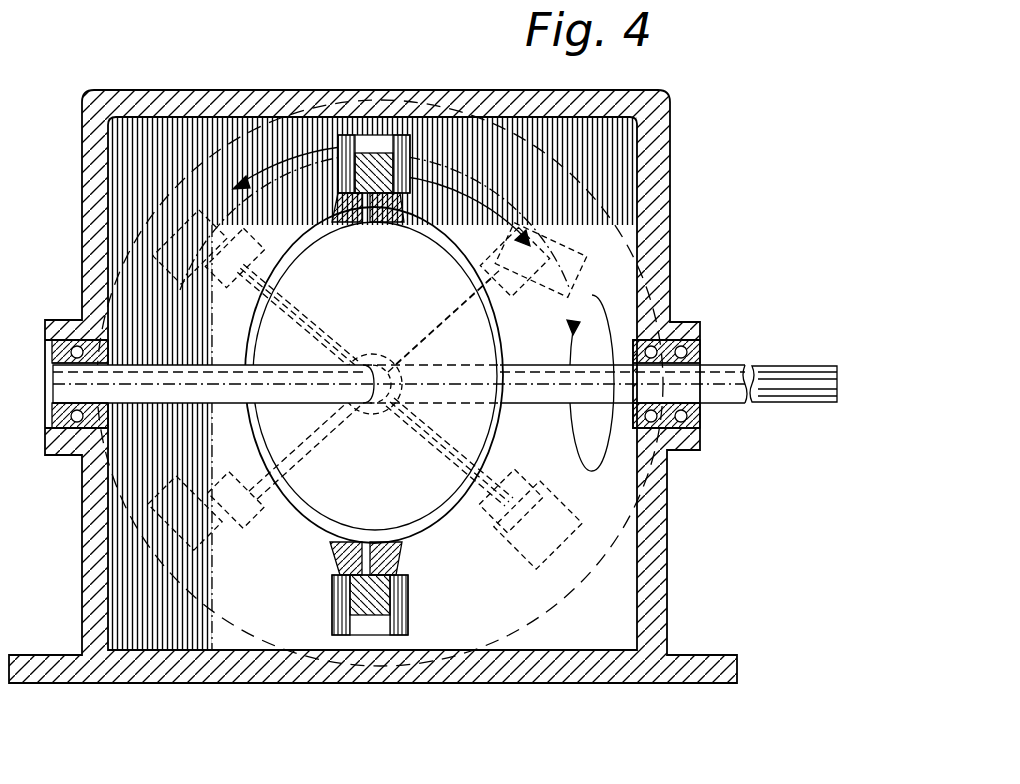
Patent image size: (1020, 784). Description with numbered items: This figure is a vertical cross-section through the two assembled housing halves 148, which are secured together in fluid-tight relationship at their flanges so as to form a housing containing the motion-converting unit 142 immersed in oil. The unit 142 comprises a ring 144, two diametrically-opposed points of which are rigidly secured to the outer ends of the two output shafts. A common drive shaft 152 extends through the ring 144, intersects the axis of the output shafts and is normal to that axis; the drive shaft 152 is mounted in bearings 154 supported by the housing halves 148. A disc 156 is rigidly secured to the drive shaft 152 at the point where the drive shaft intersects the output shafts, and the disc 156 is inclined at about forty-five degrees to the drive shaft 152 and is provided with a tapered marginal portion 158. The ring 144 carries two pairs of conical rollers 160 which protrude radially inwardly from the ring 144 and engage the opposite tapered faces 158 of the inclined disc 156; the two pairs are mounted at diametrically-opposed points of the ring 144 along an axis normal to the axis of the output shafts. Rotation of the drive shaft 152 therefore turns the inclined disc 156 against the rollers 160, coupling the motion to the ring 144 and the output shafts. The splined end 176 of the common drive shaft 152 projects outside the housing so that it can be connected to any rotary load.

The motion-converting unit 142 is at (684, 220).
The ring 144 is at (372, 160).
The housing halves 148 is at (660, 160).
The common drive shaft 152 is at (283, 392).
The bearings 154 is at (58, 445).
The disc 156 is at (322, 497).
The tapered marginal portion 158 is at (325, 548).
The rollers 160 is at (380, 205).
The splined end 176 is at (793, 375).